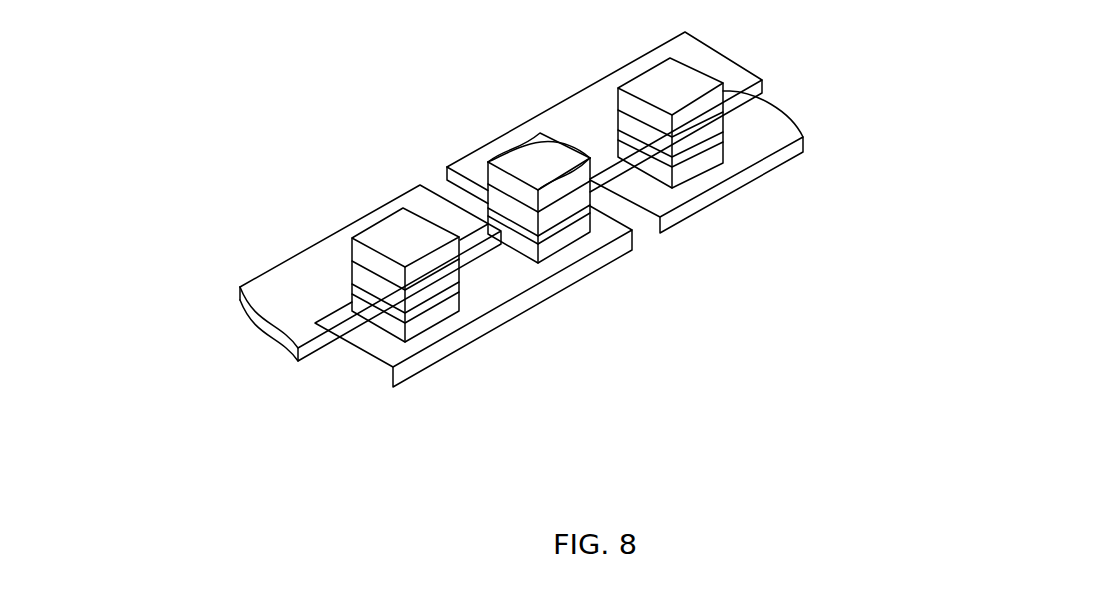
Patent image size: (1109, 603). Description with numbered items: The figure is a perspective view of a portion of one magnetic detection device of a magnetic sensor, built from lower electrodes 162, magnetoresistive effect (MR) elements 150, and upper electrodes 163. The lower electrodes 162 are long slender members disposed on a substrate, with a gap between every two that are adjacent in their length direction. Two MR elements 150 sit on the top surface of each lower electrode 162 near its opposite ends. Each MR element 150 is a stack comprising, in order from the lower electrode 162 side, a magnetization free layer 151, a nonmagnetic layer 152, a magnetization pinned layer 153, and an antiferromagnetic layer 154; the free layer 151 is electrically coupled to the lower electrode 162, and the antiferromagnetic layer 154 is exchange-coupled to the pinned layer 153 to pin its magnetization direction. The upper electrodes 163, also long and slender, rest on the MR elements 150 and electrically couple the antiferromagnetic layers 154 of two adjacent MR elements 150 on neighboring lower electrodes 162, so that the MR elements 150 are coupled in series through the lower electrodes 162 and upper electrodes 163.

The magnetoresistive effect (MR) element 150 is at (534, 231).
The magnetization free layer 151 is at (521, 263).
The nonmagnetic layer 152 is at (570, 248).
The magnetization pinned layer 153 is at (596, 230).
The antiferromagnetic layer 154 is at (633, 258).
The lower electrode 162 is at (450, 343).
The upper electrode 163 is at (337, 233).